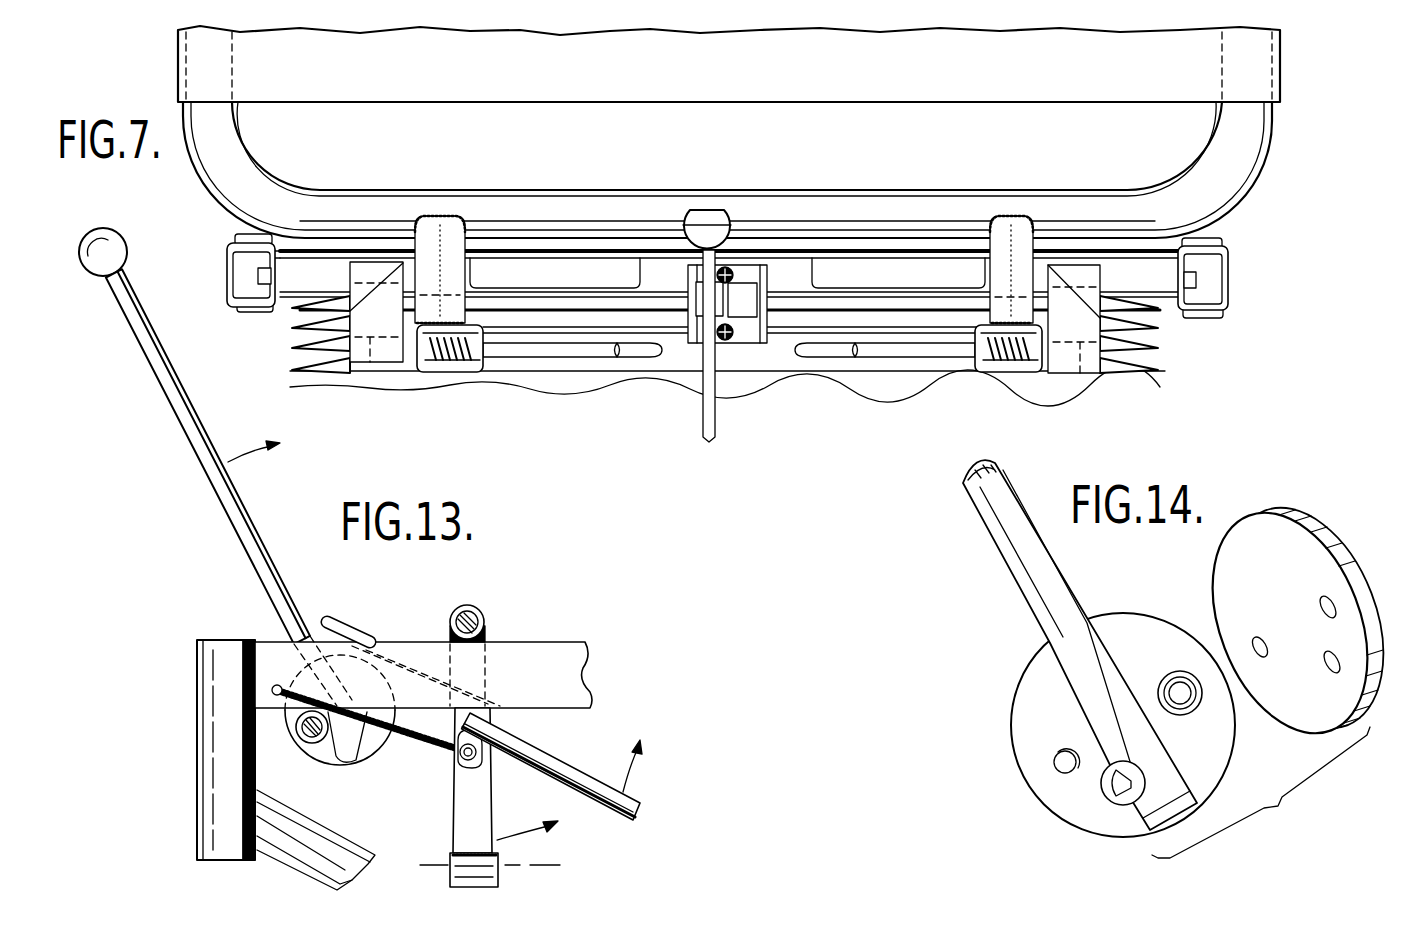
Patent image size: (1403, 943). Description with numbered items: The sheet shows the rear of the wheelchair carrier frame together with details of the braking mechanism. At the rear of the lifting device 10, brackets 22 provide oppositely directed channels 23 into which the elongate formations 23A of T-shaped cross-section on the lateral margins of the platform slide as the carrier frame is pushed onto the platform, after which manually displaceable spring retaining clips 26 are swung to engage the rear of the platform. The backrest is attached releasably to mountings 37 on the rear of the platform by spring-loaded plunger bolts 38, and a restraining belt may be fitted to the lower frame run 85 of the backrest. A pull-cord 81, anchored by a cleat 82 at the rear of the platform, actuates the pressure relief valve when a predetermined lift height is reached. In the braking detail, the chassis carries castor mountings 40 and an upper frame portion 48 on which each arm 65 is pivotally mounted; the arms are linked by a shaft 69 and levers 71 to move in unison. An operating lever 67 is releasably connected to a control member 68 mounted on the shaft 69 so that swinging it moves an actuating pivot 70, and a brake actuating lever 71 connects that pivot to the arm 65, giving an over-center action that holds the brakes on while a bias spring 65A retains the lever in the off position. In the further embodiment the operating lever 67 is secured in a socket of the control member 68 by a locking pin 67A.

In FIG. 7, the lifting device 10 is at (415, 392).
In FIG. 7, the brackets 22 is at (240, 272).
In FIG. 7, the channels 23 is at (278, 305).
In FIG. 7, the elongate formations 23A is at (262, 290).
In FIG. 7, the spring retaining clips 26 is at (235, 240).
In FIG. 7, the mountings 37 is at (1065, 358).
In FIG. 7, the spring-loaded plunger bolts 38 is at (900, 352).
In FIG. 7, the pull-cord 81 is at (715, 405).
In FIG. 7, the cleat 82 is at (700, 323).
In FIG. 7, the lower frame run 85 is at (637, 218).
In FIG. 13, the castor mountings 40 is at (218, 760).
In FIG. 13, the upper frame portion 48 is at (585, 678).
In FIG. 13, the arm 65 is at (475, 818).
In FIG. 13, the bias spring 65A is at (410, 735).
In FIG. 13, the operating lever 67 is at (205, 455).
In FIG. 14, the operating lever 67 is at (1030, 565).
In FIG. 14, the locking pin 67A is at (1125, 795).
In FIG. 14, the control member 68 is at (1040, 705).
In FIG. 14, the shaft 69 is at (1180, 682).
In FIG. 14, the actuating pivot 70 is at (1055, 768).
In FIG. 13, the brake actuating lever 71 is at (560, 770).